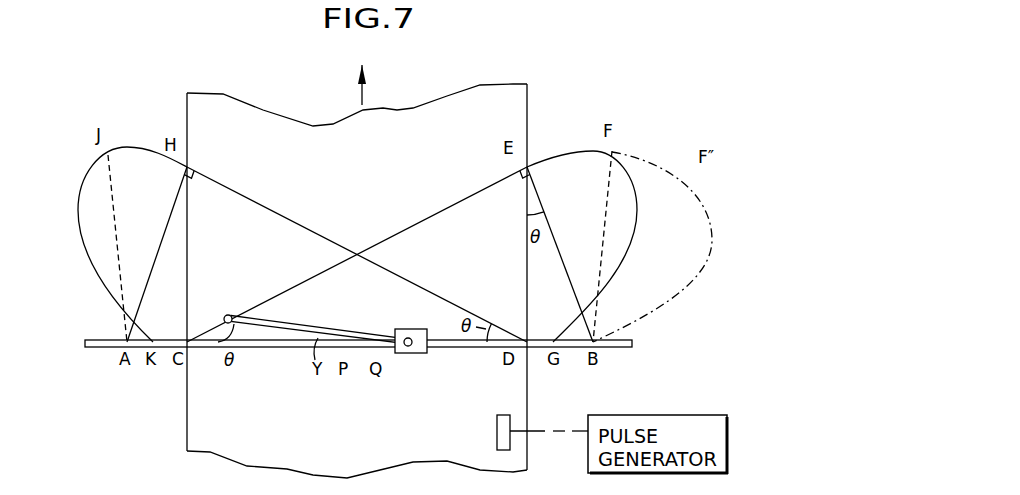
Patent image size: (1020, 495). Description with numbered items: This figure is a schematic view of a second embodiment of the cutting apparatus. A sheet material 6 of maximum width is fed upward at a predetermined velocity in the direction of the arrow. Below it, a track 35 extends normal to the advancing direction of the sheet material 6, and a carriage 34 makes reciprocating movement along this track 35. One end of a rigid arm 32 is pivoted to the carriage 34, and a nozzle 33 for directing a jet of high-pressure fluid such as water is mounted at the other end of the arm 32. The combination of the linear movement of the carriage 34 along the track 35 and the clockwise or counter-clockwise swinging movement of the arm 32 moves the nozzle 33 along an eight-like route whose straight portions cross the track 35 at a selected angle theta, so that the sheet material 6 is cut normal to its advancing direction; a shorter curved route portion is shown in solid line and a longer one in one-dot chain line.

The sheet material 6 is at (478, 98).
The arm 32 is at (290, 308).
The nozzle 33 is at (227, 314).
The carriage 34 is at (420, 354).
The track 35 is at (275, 348).